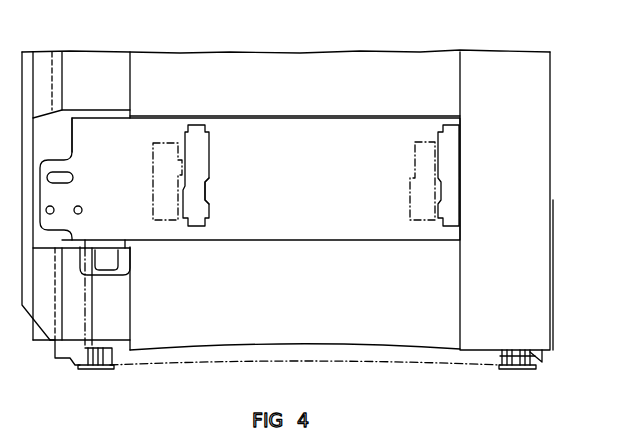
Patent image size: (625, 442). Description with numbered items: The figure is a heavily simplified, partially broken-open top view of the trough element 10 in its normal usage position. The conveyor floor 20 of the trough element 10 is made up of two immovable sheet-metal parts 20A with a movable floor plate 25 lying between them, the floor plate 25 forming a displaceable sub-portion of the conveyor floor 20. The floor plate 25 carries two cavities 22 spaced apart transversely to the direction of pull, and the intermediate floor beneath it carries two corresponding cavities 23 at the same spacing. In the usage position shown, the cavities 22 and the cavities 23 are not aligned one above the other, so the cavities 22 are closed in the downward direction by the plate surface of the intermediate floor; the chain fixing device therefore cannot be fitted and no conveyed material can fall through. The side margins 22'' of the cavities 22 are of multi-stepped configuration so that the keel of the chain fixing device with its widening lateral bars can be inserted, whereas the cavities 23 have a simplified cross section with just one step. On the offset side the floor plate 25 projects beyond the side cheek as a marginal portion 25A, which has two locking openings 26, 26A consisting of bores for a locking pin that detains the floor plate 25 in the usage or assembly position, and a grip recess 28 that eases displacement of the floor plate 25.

The trough element 10 is at (229, 42).
The conveyor floor 20 is at (393, 36).
The immovable sheet-metal parts 20A is at (298, 68).
The cavities 22 is at (342, 175).
The side margins 22'' is at (227, 194).
The cavities 23 is at (160, 188).
The floor plate 25 is at (343, 145).
The marginal portion 25A is at (100, 135).
The locking opening 26 is at (53, 207).
The second locking opening 26A is at (81, 207).
The grip recess 28 is at (58, 172).